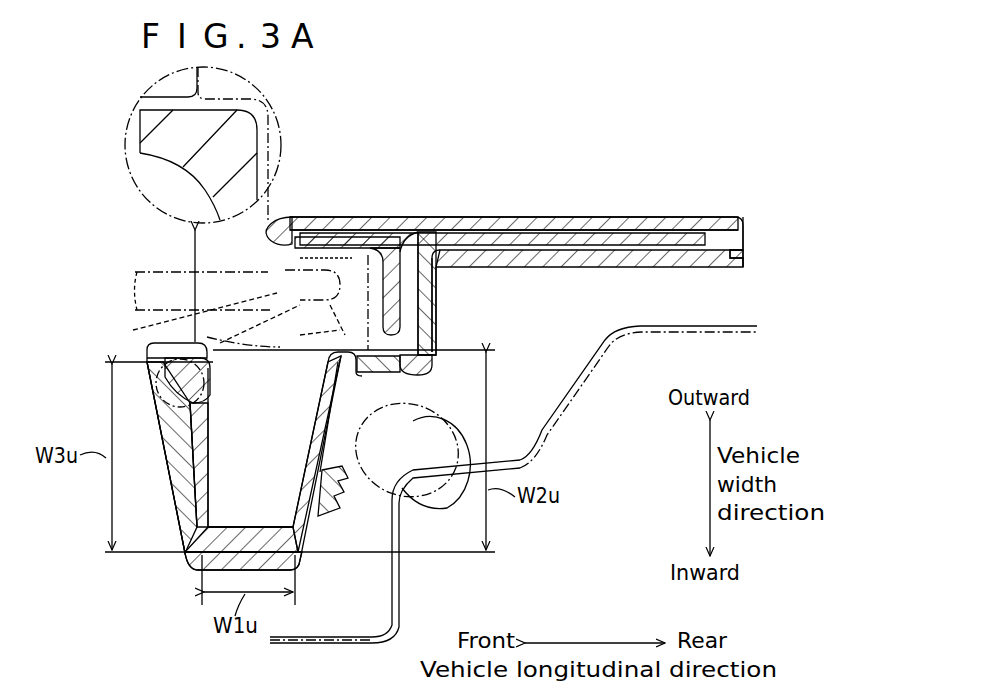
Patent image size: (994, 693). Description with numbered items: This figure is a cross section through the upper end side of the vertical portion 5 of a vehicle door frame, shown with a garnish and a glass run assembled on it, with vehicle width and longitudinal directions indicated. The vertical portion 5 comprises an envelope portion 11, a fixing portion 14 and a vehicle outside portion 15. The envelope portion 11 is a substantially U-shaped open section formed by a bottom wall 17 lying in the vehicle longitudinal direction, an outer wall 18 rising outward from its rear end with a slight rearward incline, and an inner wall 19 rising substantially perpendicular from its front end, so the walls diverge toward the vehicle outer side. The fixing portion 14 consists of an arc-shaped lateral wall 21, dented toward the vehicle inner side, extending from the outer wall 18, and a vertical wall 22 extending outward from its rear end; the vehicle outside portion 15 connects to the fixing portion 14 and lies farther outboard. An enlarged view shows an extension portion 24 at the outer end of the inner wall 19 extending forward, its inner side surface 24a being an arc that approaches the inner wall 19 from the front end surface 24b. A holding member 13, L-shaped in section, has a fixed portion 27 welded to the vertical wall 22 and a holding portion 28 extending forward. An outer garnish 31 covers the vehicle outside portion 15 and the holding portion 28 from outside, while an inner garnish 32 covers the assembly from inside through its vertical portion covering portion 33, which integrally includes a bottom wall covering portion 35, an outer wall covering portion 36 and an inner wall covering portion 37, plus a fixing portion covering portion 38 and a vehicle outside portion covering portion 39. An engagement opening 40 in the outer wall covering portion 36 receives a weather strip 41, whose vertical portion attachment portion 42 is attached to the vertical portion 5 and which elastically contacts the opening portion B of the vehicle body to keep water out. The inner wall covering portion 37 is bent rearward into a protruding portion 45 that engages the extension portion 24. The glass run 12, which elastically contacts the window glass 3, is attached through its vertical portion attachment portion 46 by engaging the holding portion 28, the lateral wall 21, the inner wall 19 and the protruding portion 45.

The window glass 3 is at (147, 262).
The vertical portion 5 is at (691, 157).
The envelope portion 11 is at (200, 550).
The glass run 12 is at (165, 330).
The holding member 13 is at (287, 222).
The fixing portion 14 is at (410, 233).
The vehicle outside portion 15 is at (612, 236).
The bottom wall 17 is at (244, 540).
The outer wall 18 is at (322, 426).
The inner wall 19 is at (212, 445).
The lateral wall 21 is at (418, 377).
The vertical wall 22 is at (432, 293).
The extension portion 24 is at (170, 380).
The inner side surface 24a is at (140, 152).
The front end surface 24b is at (171, 145).
The fixed portion 27 is at (395, 300).
The holding portion 28 is at (330, 240).
The outer garnish 31 is at (527, 222).
The inner garnish 32 is at (743, 270).
The vertical portion covering portion 33 is at (764, 281).
The bottom wall covering portion 35 is at (285, 575).
The outer wall covering portion 36 is at (322, 518).
The inner wall covering portion 37 is at (172, 493).
The fixing portion covering portion 38 is at (422, 332).
The vehicle outside portion covering portion 39 is at (540, 264).
The engagement opening 40 is at (368, 480).
The weather strip 41 is at (430, 512).
The vertical portion attachment portion 42 is at (395, 530).
The protruding portion 45 is at (147, 346).
The vertical portion attachment portion 46 is at (196, 302).
The opening portion B is at (575, 400).